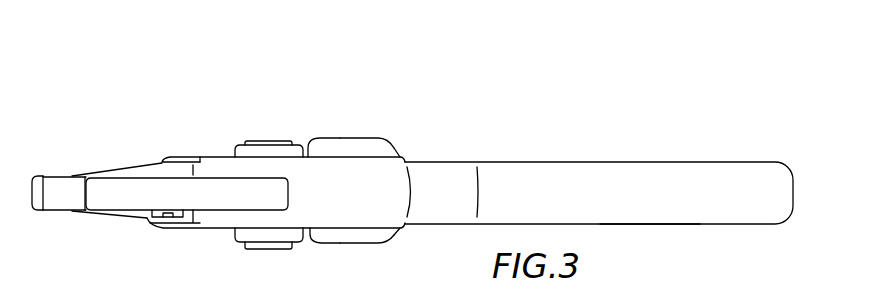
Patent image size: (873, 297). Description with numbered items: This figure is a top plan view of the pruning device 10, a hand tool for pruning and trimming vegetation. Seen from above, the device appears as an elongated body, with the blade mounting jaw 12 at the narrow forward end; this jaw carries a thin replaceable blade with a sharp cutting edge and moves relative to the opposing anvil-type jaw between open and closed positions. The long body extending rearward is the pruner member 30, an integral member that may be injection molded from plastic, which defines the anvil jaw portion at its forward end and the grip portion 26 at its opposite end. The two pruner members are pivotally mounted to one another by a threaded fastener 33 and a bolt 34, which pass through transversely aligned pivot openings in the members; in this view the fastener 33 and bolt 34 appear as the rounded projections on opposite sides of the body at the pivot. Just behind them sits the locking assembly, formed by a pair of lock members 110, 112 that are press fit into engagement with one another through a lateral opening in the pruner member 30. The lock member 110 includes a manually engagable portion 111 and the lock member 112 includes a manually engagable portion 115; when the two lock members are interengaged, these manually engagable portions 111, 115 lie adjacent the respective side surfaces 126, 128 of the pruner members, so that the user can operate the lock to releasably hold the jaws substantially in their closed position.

The pruning device 10 is at (223, 102).
The jaw 12 is at (57, 186).
The grip portion 26 is at (643, 224).
The pruner member 30 is at (602, 172).
The threaded fastener 33 is at (270, 250).
The bolt 34 is at (262, 140).
The lock member 110 is at (370, 145).
The manually engagable portion 111 is at (392, 150).
The lock member 112 is at (347, 232).
The manually engagable portion 115 is at (398, 238).
The side surface 126 is at (333, 157).
The side surface 128 is at (313, 233).